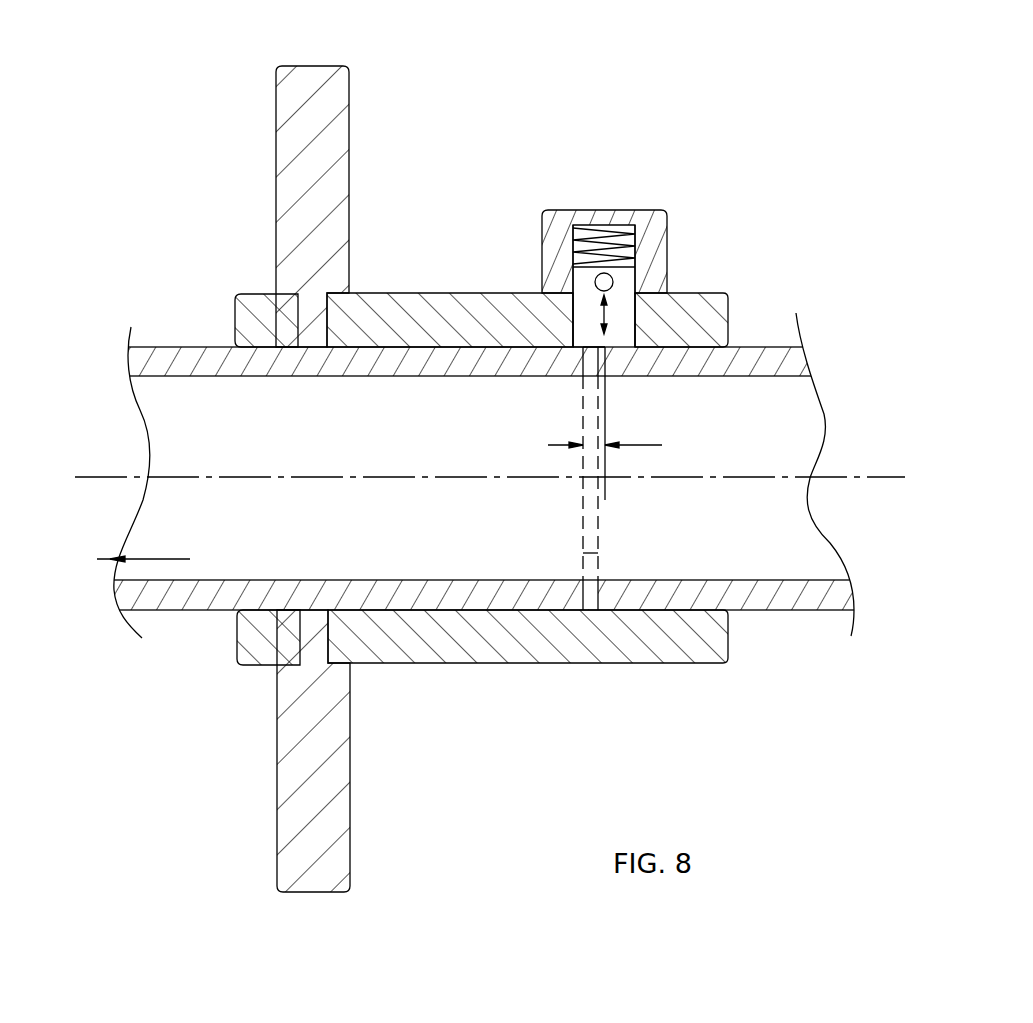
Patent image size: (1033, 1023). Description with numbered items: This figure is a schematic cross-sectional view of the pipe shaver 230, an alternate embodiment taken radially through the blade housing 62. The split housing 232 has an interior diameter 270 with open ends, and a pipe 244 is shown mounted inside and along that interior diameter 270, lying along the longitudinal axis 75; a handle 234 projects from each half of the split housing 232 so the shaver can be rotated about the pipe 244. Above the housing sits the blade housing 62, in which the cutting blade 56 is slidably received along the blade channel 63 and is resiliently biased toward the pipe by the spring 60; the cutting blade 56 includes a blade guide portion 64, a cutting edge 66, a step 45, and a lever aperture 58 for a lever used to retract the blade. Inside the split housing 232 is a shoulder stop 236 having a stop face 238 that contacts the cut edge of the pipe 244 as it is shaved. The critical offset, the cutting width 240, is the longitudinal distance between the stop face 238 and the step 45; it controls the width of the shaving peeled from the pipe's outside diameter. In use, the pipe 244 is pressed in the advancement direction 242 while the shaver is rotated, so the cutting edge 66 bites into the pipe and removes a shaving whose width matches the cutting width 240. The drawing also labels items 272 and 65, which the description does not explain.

The pipe shaver 230 is at (640, 190).
The split housing 232 is at (533, 643).
The handle 234 is at (327, 95).
The shoulder stop 236 is at (598, 552).
The stop face 238 is at (598, 528).
The cutting width 240 is at (631, 441).
The advancement direction 242 is at (142, 560).
The pipe 244 is at (187, 608).
The interior diameter 270 is at (267, 610).
The upper retaining ring 272 is at (253, 307).
The step 45 is at (603, 347).
The cutting blade 56 is at (622, 327).
The lever aperture 58 is at (603, 272).
The spring 60 is at (623, 227).
The blade housing 62 is at (552, 212).
The blade channel 63 is at (635, 235).
The blade guide portion 64 is at (598, 392).
The direction of movement 65 is at (613, 312).
The cutting edge 66 is at (580, 350).
The longitudinal axis 75 is at (758, 477).